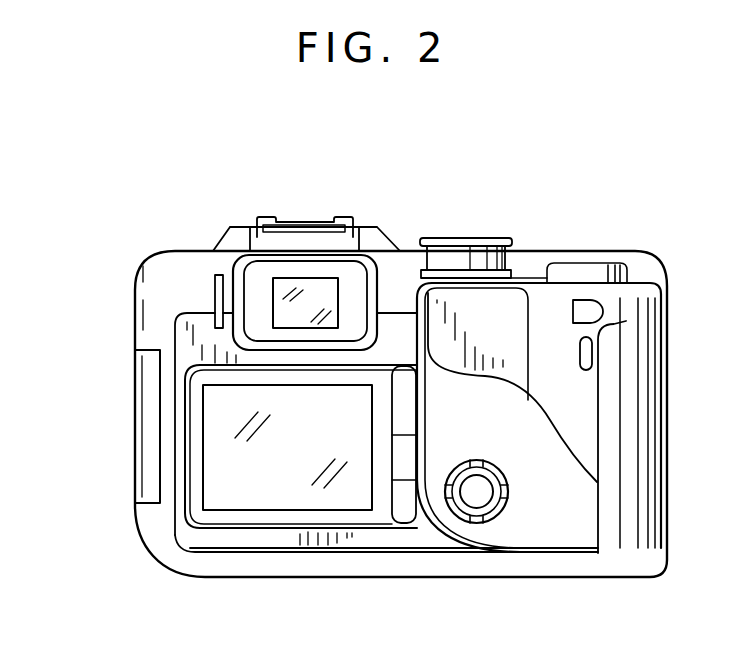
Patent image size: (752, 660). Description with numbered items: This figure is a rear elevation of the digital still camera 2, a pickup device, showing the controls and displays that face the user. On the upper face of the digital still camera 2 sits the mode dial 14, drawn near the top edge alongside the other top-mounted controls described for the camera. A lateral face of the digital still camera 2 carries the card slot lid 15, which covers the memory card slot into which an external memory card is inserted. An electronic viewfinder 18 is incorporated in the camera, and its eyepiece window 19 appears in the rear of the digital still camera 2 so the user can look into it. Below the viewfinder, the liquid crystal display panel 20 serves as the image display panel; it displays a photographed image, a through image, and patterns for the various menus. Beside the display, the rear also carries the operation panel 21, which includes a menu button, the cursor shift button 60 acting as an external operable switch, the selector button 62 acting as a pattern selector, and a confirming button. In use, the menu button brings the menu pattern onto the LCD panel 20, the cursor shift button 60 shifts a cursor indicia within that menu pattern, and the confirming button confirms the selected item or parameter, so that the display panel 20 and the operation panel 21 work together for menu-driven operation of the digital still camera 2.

The digital still camera 2 is at (316, 188).
The mode dial 14 is at (470, 268).
The card slot lid 15 is at (147, 432).
The electronic viewfinder 18 is at (249, 262).
The eyepiece window 19 is at (283, 310).
The liquid crystal display panel 20 is at (292, 503).
The operation panel 21 is at (438, 407).
The cursor shift button 60 is at (509, 493).
The selector button 62 is at (403, 515).